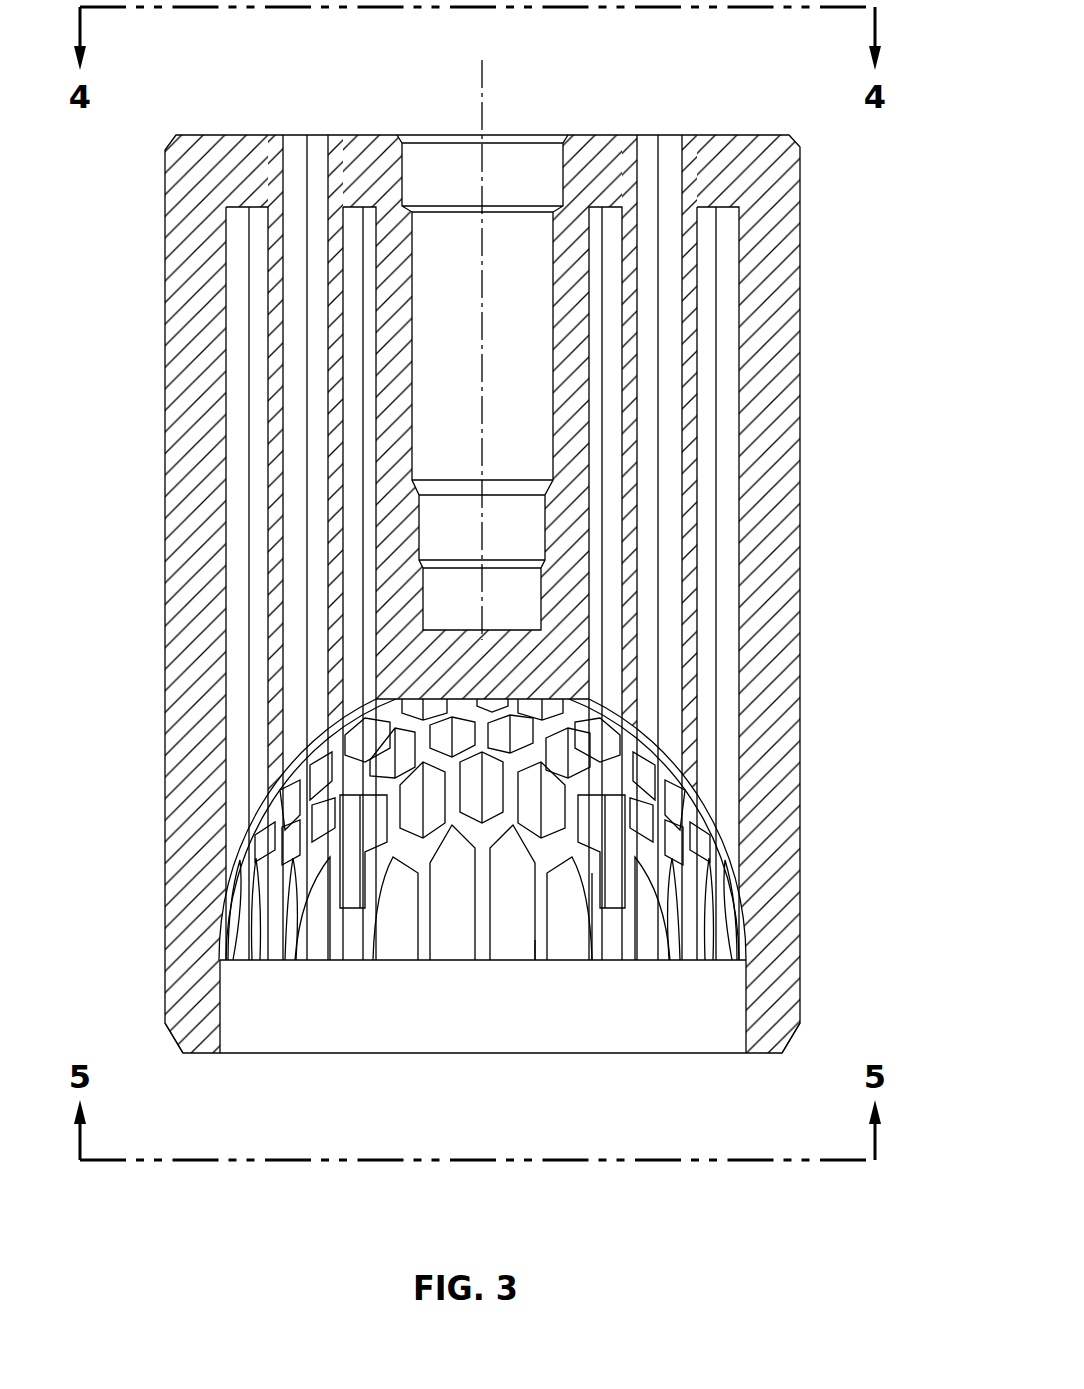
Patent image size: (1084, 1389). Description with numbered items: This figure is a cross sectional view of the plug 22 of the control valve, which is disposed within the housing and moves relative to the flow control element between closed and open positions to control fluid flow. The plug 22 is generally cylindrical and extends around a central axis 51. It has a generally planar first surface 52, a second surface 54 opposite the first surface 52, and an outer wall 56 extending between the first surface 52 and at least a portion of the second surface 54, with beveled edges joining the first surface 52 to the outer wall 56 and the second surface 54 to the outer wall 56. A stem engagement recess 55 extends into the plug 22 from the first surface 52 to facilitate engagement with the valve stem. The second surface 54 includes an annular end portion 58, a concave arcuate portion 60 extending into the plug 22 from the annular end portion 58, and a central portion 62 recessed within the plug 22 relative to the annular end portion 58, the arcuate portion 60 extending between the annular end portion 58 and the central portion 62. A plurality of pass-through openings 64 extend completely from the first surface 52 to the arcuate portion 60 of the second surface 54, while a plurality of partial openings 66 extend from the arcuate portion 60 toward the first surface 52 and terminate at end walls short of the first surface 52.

The plug 22 is at (862, 190).
The central axis 51 is at (478, 86).
The first surface 52 is at (258, 135).
The second surface 54 is at (760, 1063).
The stem engagement recess 55 is at (518, 238).
The outer wall 56 is at (800, 490).
The annular end portion 58 is at (203, 1055).
The arcuate portion 60 is at (603, 945).
The central portion 62 is at (465, 697).
The pass-through openings 64 is at (315, 152).
The partial openings 66 is at (237, 412).